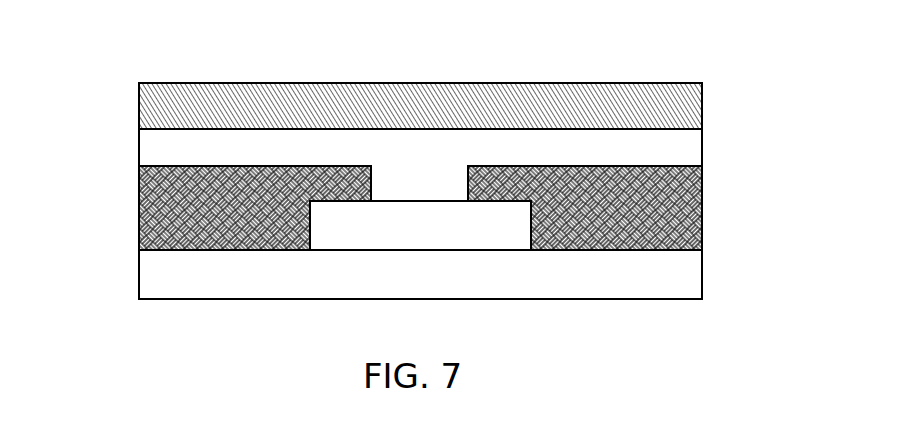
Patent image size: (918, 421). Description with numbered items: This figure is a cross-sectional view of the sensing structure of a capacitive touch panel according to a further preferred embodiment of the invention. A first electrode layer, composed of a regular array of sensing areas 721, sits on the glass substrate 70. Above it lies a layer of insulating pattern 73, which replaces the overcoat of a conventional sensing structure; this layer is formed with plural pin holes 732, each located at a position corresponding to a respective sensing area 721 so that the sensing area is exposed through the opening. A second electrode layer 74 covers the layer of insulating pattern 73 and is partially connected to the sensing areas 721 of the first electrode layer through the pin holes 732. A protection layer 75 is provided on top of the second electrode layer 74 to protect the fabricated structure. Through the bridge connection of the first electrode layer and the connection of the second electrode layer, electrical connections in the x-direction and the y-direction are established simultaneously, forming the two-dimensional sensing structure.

The glass substrate 70 is at (667, 283).
The sensing area 721 is at (333, 236).
The layer of insulating pattern 73 is at (668, 223).
The pin hole 732 is at (467, 188).
The dielectric layer 74 is at (665, 150).
The protection layer 75 is at (665, 102).